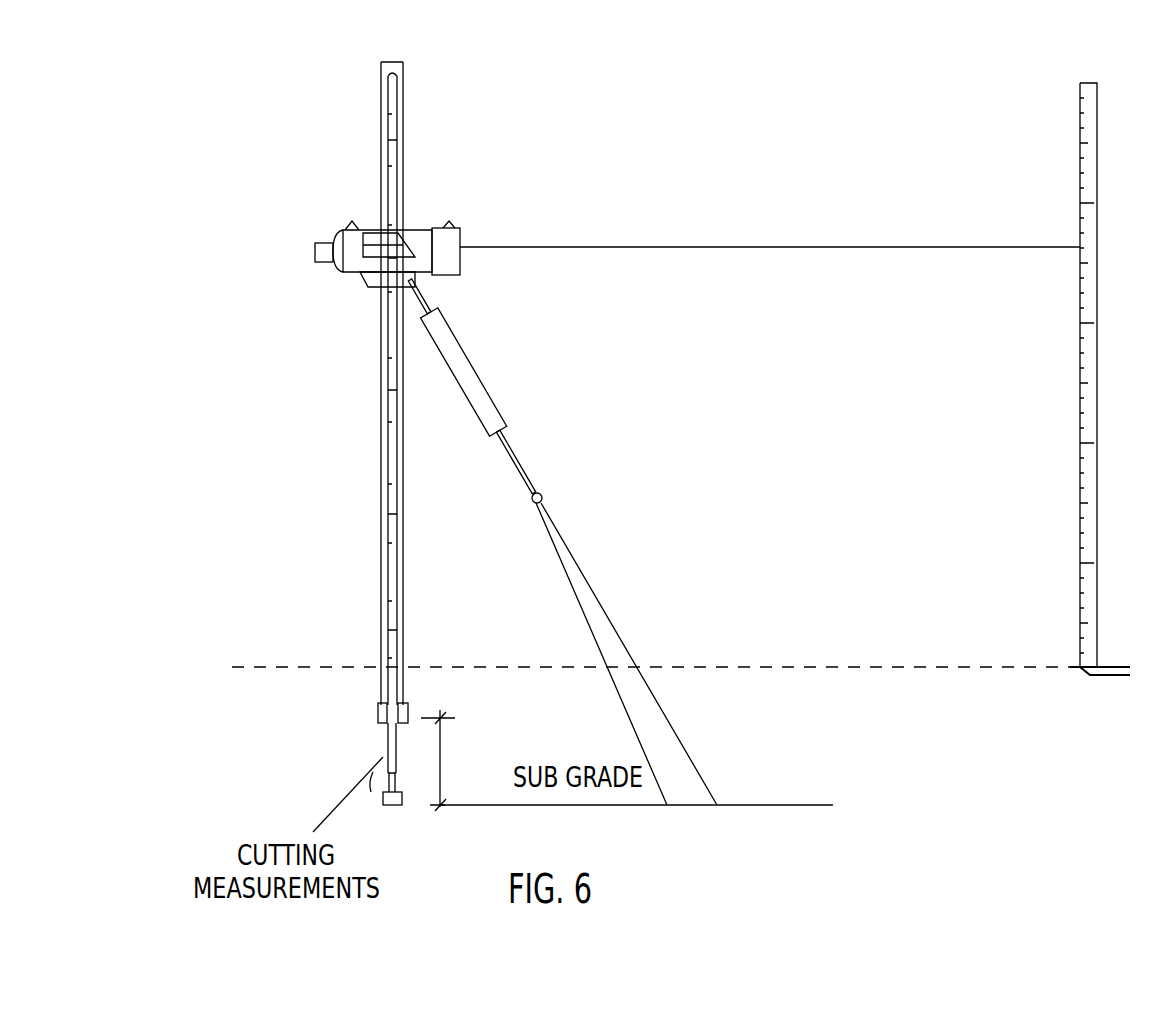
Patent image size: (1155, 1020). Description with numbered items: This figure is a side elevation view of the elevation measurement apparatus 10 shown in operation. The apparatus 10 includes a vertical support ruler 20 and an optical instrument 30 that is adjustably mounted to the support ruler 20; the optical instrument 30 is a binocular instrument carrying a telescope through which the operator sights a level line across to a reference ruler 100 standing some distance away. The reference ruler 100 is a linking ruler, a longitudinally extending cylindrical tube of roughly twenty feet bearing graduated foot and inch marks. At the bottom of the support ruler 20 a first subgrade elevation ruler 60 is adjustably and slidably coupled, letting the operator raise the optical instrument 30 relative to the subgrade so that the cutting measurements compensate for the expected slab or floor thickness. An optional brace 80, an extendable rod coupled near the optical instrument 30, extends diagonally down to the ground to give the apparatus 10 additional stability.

The elevation measurement apparatus 10 is at (228, 112).
The support ruler 20 is at (403, 427).
The optical instrument 30 is at (436, 226).
The first subgrade elevation ruler 60 is at (398, 748).
The brace 80 is at (499, 396).
The reference ruler 100 is at (1072, 129).